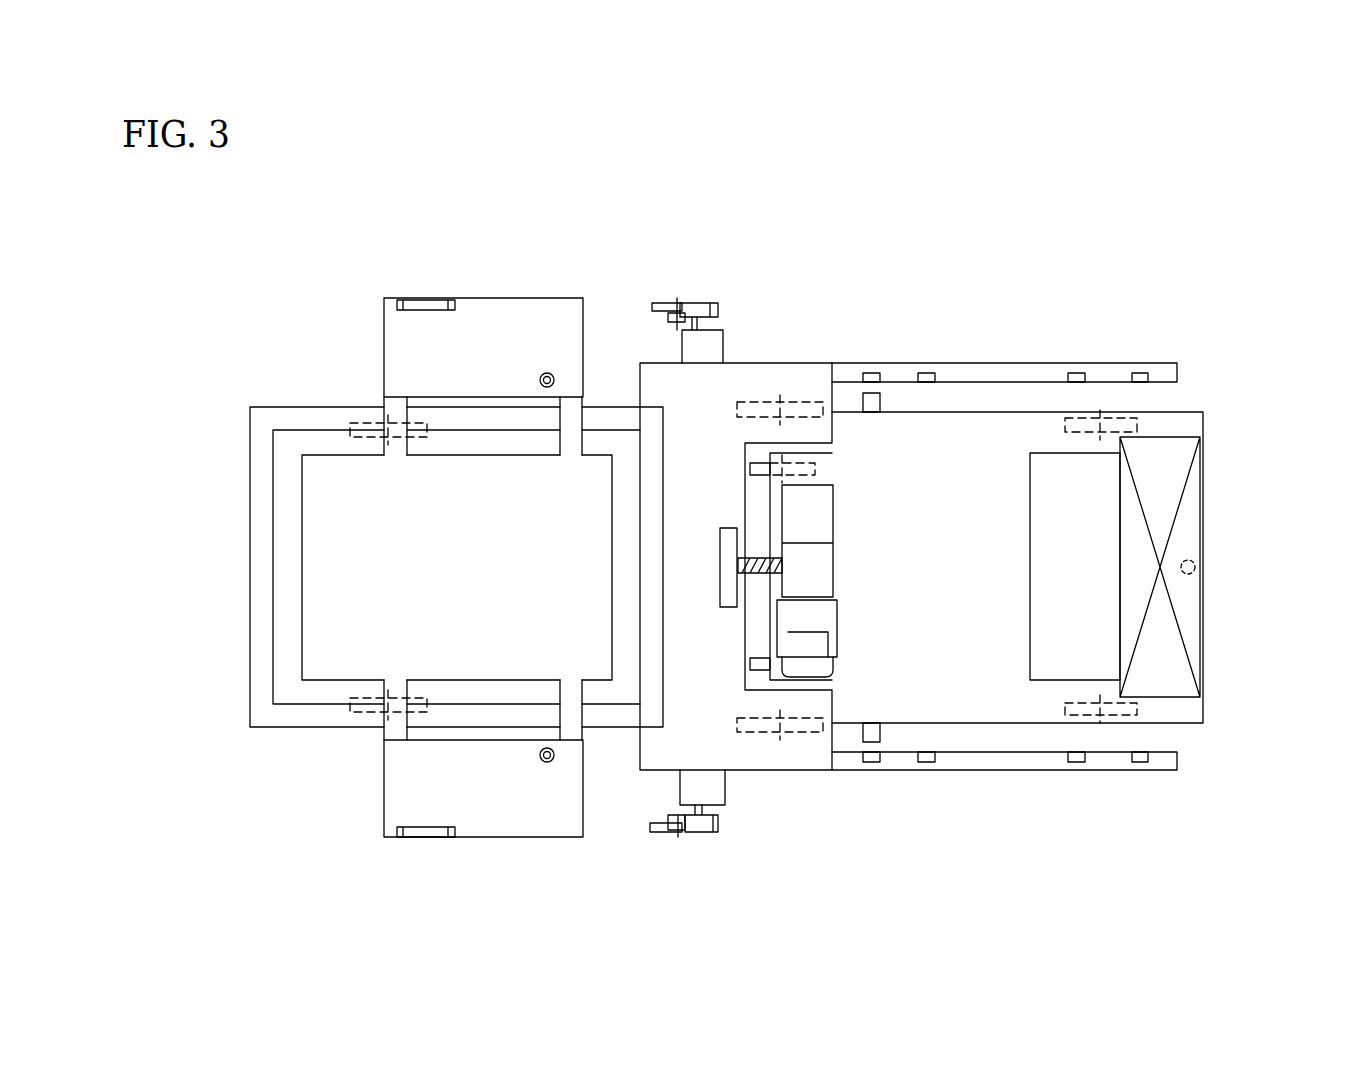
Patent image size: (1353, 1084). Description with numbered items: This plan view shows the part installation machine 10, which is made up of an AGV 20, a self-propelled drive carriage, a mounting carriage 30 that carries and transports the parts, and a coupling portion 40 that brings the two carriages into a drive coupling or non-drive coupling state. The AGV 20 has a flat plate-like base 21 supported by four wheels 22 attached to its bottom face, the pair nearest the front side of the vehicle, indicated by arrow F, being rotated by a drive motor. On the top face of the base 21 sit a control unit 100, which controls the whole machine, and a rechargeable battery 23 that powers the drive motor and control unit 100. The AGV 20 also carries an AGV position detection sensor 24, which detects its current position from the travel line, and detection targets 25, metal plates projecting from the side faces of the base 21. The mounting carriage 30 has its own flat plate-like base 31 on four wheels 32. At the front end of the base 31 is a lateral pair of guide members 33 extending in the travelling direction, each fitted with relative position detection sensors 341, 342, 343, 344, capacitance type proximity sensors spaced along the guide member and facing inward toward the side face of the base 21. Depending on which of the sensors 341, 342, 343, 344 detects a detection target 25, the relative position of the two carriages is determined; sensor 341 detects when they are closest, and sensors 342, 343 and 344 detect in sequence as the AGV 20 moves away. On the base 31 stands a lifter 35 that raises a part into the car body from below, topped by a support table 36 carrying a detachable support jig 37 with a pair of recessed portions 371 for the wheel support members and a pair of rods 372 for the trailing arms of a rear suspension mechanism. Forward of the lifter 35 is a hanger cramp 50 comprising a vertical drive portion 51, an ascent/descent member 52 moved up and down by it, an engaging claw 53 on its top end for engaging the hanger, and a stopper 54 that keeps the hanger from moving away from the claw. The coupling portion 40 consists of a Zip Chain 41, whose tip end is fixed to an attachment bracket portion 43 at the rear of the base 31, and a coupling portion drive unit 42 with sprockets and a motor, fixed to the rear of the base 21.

The part installation machine 10 is at (1195, 254).
The AGV 20 is at (1207, 490).
The base 21 is at (1203, 710).
The wheels 22 is at (815, 468).
The rechargeable battery 23 is at (1030, 600).
The AGV position detection sensor 24 is at (1195, 572).
The detection target 25 is at (863, 404).
The mounting carriage 30 is at (290, 370).
The base 31 is at (790, 772).
The wheels 32 is at (380, 423).
The guide members 33 is at (1177, 372).
The relative position detection sensor 341 is at (872, 373).
The relative position detection sensor 342 is at (927, 373).
The relative position detection sensor 343 is at (1077, 373).
The relative position detection sensor 344 is at (1140, 373).
The lifter 35 is at (258, 592).
The support table 36 is at (320, 538).
The support jig 37 is at (505, 302).
The recessed portions 371 is at (432, 300).
The rods 372 is at (555, 380).
The coupling portion 40 is at (866, 518).
The Zip Chain 41 is at (760, 557).
The coupling portion drive unit 42 is at (820, 613).
The attachment bracket portion 43 is at (720, 565).
The hanger cramp 50 is at (720, 236).
The vertical drive portion 51 is at (682, 350).
The ascent/descent member 52 is at (668, 318).
The engaging claw 53 is at (720, 310).
The stopper 54 is at (665, 303).
The control unit 100 is at (1203, 640).
The front side of the vehicle F is at (1247, 567).